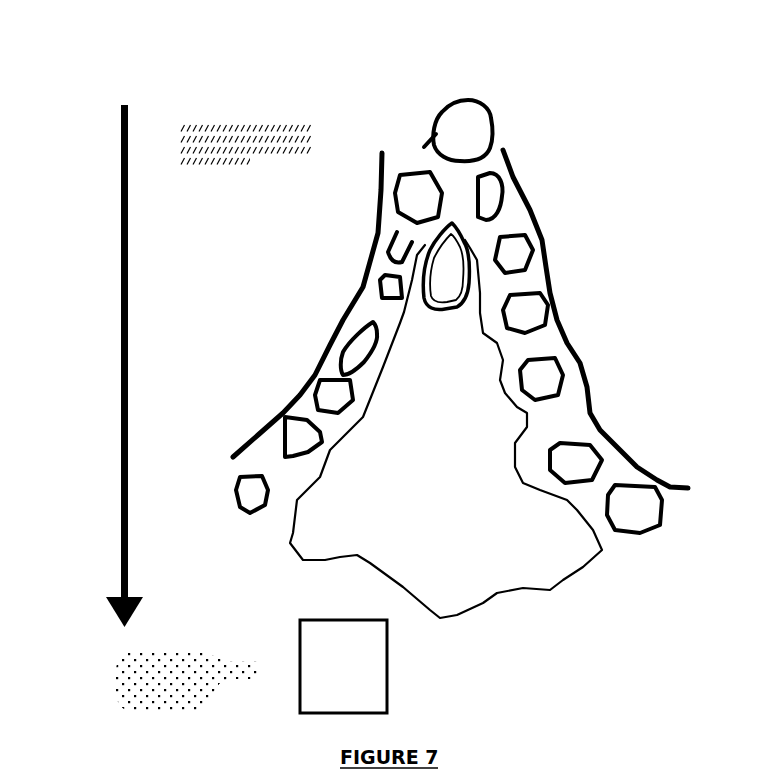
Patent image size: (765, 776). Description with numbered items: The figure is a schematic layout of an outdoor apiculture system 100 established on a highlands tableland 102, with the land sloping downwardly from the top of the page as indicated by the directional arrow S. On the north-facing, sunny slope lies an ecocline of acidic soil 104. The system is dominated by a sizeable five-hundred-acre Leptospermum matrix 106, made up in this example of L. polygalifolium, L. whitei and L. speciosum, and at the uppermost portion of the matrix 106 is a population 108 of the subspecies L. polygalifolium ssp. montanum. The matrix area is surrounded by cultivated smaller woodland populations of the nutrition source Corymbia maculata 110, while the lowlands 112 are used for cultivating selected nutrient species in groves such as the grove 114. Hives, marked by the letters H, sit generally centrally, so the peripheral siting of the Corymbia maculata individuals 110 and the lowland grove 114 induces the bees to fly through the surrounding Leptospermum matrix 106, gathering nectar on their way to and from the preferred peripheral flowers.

The outdoor apiculture system 100 is at (67, 63).
The highlands tableland 102 is at (246, 132).
The ecocline of acidic soil 104 is at (525, 155).
The Leptospermum matrix 106 is at (488, 538).
The population of L. polygalifolium ssp. montanum 108 is at (451, 265).
The Corymbia maculata populations 110 is at (349, 337).
The lowlands 112 is at (235, 647).
The grove 114 is at (348, 668).